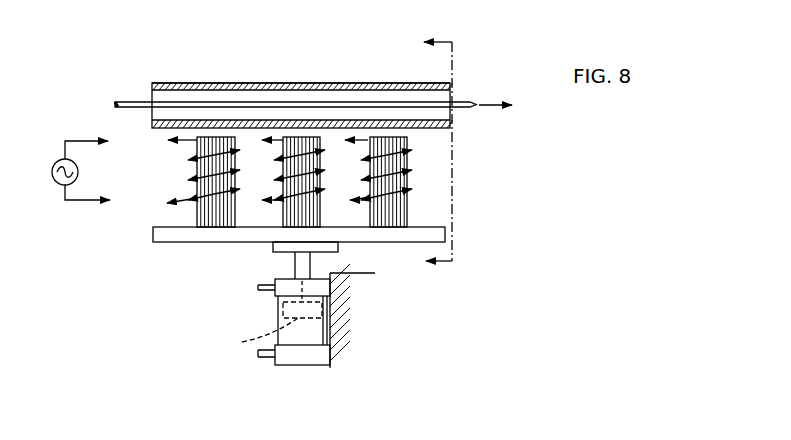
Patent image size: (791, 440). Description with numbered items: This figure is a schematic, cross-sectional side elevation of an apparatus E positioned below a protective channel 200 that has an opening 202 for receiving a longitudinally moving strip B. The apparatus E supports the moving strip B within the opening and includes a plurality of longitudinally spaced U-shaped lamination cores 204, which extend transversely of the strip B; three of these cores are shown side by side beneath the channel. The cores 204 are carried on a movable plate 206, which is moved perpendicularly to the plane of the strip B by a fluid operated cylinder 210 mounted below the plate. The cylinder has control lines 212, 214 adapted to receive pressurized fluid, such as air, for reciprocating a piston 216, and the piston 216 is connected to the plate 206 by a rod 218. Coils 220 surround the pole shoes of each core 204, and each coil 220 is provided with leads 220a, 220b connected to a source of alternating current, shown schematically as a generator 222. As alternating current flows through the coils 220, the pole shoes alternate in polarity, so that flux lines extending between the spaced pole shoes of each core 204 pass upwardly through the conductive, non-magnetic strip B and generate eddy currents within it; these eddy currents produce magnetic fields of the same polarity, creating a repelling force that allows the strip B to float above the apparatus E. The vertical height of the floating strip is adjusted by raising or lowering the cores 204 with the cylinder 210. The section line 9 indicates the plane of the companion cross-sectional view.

The protective channel 200 is at (294, 83).
The opening 202 is at (352, 92).
The U-shaped lamination core 204 is at (185, 83).
The movable plate 206 is at (197, 242).
The fluid operated cylinder 210 is at (303, 337).
The control line 212 is at (284, 325).
The control line 214 is at (266, 360).
The piston 216 is at (271, 356).
The rod 218 is at (277, 279).
The coil 220 is at (240, 170).
The lead 220a is at (91, 141).
The lead 220b is at (352, 201).
The generator 222 is at (57, 163).
The section line 9 is at (425, 158).
The strip B is at (125, 100).
The apparatus E is at (436, 195).